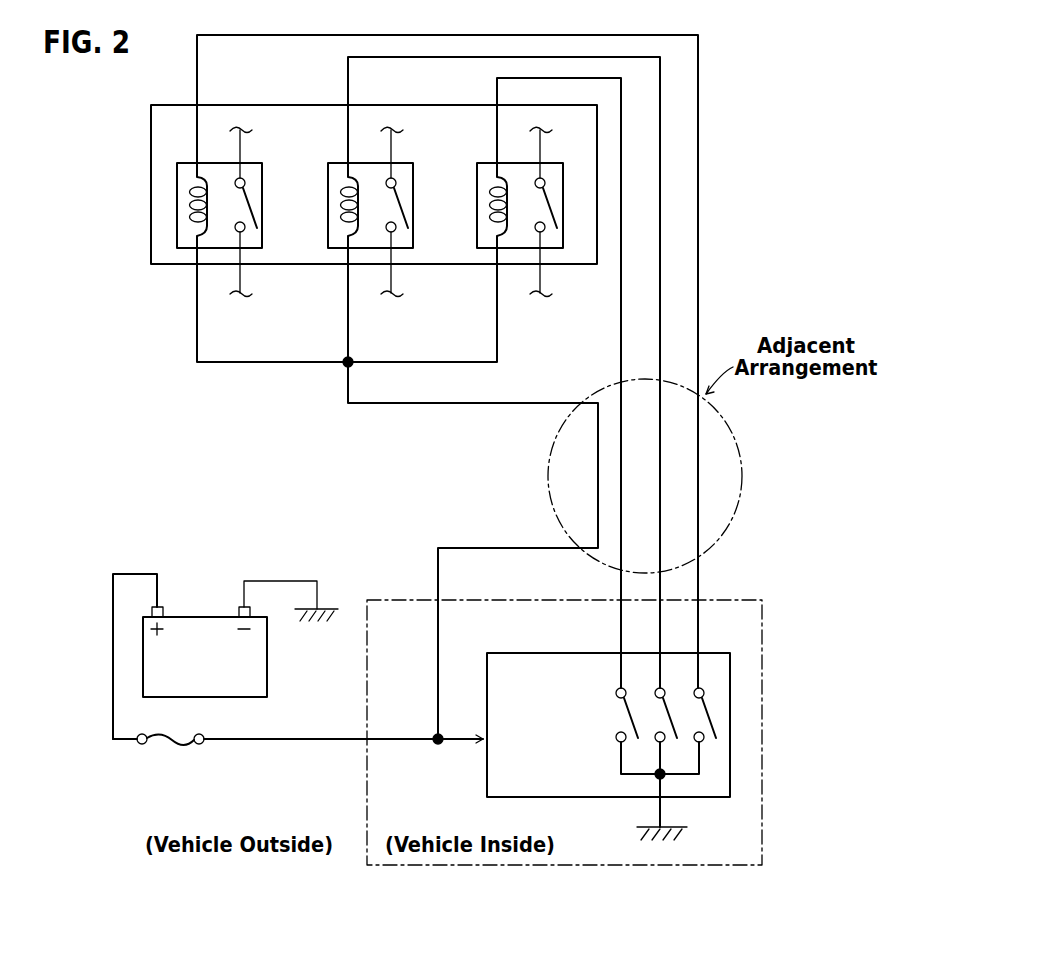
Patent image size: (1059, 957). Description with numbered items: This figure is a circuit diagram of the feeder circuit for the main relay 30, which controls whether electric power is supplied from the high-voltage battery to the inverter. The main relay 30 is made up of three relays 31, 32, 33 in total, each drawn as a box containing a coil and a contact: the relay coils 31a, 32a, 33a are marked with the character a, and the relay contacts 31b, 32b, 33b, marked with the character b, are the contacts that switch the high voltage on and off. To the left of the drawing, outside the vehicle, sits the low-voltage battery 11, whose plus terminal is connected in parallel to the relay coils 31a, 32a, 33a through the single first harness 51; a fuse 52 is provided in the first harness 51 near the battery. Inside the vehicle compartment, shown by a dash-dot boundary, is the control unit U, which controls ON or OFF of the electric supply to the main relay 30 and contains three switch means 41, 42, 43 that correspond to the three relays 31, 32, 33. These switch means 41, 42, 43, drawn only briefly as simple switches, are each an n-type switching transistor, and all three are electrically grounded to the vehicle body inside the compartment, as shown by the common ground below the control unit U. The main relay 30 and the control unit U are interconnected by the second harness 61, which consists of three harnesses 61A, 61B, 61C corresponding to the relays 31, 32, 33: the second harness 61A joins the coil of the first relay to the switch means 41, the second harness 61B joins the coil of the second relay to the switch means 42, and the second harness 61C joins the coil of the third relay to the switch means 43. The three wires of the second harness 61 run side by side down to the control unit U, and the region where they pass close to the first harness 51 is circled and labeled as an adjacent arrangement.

The low-voltage battery 11 is at (195, 624).
The main relay 30 is at (147, 233).
The relay 31 is at (220, 232).
The relay coil 31a is at (195, 223).
The relay contact 31b is at (255, 212).
The relay 32 is at (380, 222).
The relay coil 32a is at (343, 222).
The relay contact 32b is at (406, 212).
The relay 33 is at (543, 229).
The relay coil 33a is at (506, 228).
The relay contact 33b is at (555, 212).
The switch means 41 is at (712, 716).
The switch means 42 is at (680, 735).
The switch means 43 is at (629, 746).
The first harness 51 is at (465, 547).
The fuse 52 is at (170, 745).
The second harness 61 is at (512, 361).
The second harness 61A is at (700, 106).
The second harness 61B is at (662, 148).
The second harness 61C is at (623, 188).
The control unit U is at (732, 677).